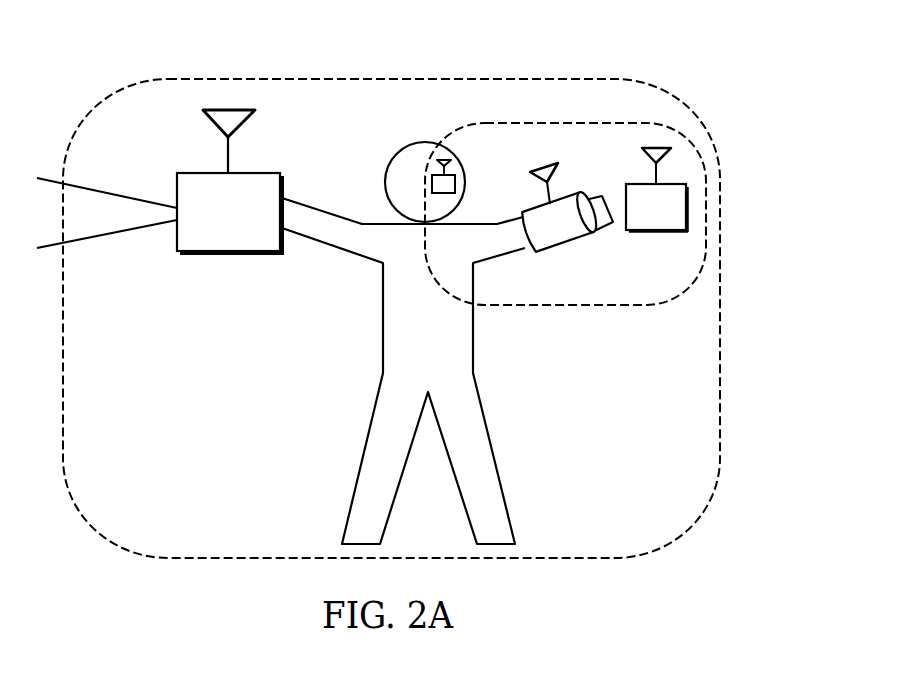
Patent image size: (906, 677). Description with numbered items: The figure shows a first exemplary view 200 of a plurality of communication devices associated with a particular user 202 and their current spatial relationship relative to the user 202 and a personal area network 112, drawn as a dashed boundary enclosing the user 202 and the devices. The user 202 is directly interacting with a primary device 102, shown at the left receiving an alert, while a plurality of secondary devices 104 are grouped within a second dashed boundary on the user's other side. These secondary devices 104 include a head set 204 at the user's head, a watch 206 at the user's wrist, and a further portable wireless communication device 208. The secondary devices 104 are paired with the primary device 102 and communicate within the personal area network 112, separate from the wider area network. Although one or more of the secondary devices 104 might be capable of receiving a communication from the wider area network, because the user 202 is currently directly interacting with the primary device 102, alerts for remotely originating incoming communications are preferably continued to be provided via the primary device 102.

The first exemplary view 200 is at (724, 47).
The personal area network 112 is at (720, 318).
The secondary devices 104 is at (706, 215).
The primary device 102 is at (230, 254).
The user 202 is at (473, 332).
The head set 204 is at (455, 184).
The watch 206 is at (568, 247).
The further portable wireless communication device 208 is at (657, 232).